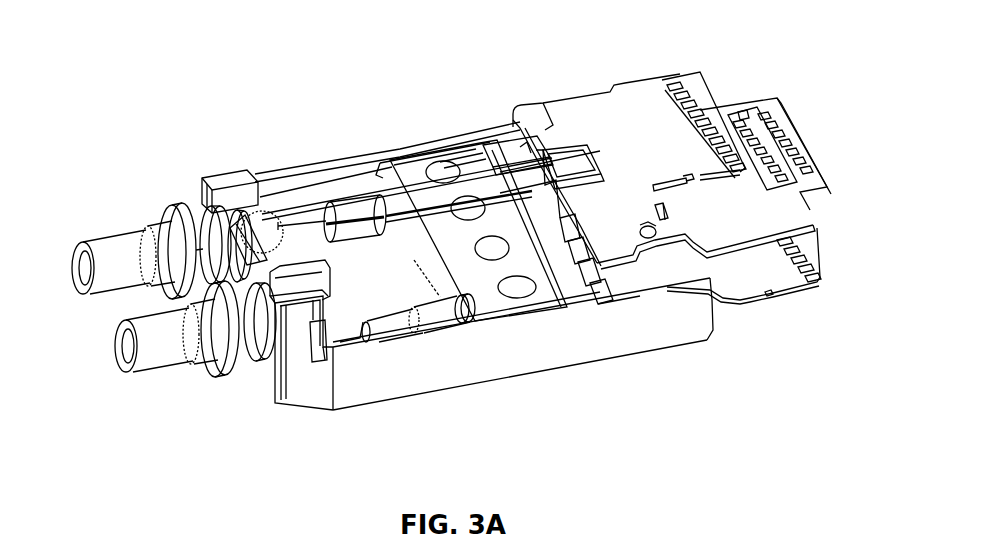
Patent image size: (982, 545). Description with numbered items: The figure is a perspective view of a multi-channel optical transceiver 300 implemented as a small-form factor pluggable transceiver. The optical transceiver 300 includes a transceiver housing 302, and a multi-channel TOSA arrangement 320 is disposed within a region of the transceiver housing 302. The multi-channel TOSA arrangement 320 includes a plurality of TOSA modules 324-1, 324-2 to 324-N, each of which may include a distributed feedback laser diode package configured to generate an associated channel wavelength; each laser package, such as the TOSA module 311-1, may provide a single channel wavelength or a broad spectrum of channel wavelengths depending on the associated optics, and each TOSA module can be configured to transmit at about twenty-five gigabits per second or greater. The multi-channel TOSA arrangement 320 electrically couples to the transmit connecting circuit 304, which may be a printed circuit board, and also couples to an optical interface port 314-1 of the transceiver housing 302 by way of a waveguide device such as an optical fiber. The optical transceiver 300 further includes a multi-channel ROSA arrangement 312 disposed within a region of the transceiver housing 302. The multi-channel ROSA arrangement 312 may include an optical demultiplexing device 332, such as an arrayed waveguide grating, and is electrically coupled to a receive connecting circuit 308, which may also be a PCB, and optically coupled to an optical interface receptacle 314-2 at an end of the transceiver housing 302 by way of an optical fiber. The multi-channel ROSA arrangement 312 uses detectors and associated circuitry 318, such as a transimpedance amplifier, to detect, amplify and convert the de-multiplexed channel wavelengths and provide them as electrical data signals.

The optical transceiver 300 is at (288, 112).
The transceiver housing 302 is at (421, 368).
The transmit connecting circuit 304 is at (748, 260).
The receive connecting circuit 308 is at (580, 108).
The TOSA module 311-1 is at (509, 160).
The multi-channel ROSA arrangement 312 is at (470, 165).
The optical interface port 314-1 is at (125, 266).
The optical interface receptacle 314-2 is at (176, 342).
The associated circuitry 318 is at (570, 160).
The multi-channel TOSA arrangement 320 is at (548, 297).
The TOSA module 324-1 is at (560, 256).
The TOSA module 324-2 is at (576, 273).
The TOSA module 324-N is at (593, 284).
The optical demultiplexing device 332 is at (342, 210).